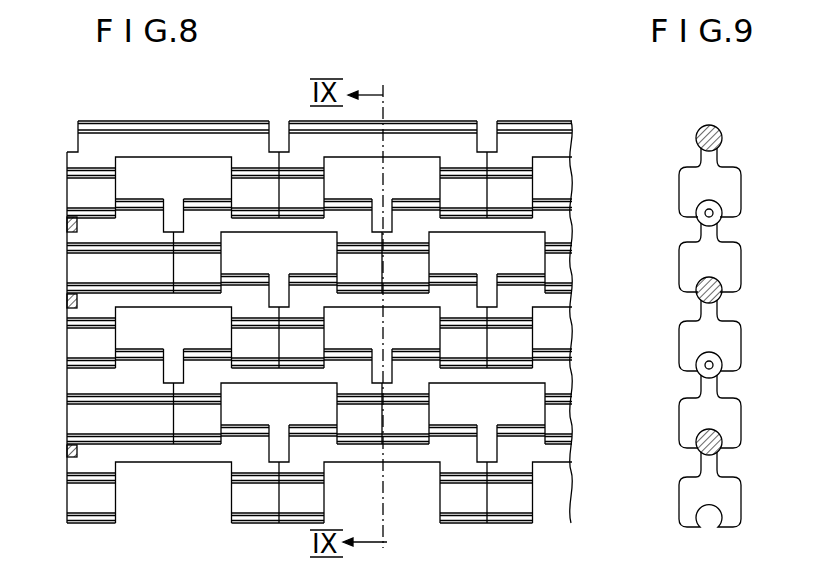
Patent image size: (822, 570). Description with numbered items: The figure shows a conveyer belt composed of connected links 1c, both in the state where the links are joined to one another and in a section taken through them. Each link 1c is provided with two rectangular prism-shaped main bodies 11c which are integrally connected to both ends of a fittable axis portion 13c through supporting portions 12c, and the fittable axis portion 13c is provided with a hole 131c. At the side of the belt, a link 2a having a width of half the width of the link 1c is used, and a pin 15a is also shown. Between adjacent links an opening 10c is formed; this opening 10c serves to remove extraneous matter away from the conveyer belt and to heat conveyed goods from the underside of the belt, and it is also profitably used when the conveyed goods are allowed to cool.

In FIG. 8, the link 1c is at (186, 118).
In FIG. 9, the link 1c is at (713, 304).
In FIG. 8, the opening 10c is at (423, 172).
In FIG. 8, the main body 11c is at (465, 190).
In FIG. 9, the main body 11c is at (730, 193).
In FIG. 9, the supporting portion 12c is at (700, 154).
In FIG. 8, the fittable axis portion 13c is at (118, 134).
In FIG. 9, the fittable axis portion 13c is at (730, 108).
In FIG. 9, the hole 131c is at (702, 219).
In FIG. 8, the link 2a is at (60, 287).
In FIG. 8, the pin 15a is at (67, 222).